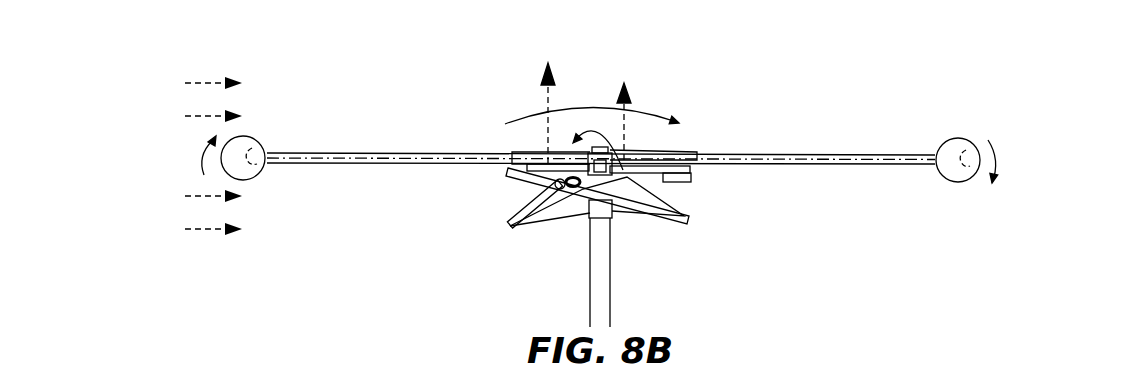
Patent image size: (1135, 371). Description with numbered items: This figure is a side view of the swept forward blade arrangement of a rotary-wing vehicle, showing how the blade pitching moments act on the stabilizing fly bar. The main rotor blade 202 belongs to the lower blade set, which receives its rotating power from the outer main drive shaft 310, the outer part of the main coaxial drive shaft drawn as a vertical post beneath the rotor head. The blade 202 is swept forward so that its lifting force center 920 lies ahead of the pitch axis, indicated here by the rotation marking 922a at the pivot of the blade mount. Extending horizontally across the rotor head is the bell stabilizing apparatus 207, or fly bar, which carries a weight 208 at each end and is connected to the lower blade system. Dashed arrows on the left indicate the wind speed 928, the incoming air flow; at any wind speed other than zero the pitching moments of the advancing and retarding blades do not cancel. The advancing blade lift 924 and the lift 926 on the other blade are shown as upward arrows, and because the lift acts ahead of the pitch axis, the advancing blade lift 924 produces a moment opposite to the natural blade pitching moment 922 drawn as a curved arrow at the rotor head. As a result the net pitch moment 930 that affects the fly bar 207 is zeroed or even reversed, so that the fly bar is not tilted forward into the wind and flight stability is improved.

The main rotor blade 202 is at (680, 208).
The bell stabilizing apparatus 207 is at (362, 153).
The counterweight ball 208 is at (958, 138).
The outer main drive shaft 310 is at (610, 288).
The lifting force center 920 is at (567, 178).
The blade pitching moment 922 is at (620, 143).
The pivot arm 922a is at (536, 218).
The advancing blade lift 924 is at (552, 103).
The lift direction arrow 926 is at (628, 108).
The wind speed 928 is at (202, 83).
The net pitch moment 930 is at (660, 112).